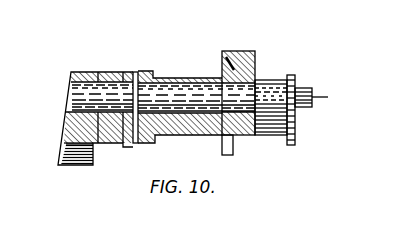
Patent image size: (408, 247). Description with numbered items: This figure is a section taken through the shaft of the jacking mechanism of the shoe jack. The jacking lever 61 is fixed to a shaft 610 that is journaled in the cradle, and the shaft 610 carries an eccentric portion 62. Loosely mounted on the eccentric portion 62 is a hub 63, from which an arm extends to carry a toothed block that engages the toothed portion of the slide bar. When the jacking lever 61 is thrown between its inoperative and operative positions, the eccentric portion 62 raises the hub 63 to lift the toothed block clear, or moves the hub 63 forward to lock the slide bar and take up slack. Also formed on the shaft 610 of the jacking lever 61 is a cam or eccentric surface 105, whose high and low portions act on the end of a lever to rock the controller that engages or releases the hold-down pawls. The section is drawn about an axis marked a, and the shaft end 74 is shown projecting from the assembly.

The jacking lever 61 is at (78, 72).
The eccentric portion 62 is at (222, 64).
The hub 63 is at (256, 52).
The shaft 74 is at (299, 90).
The cam or eccentric surface 105 is at (112, 147).
The shaft 610 is at (150, 143).
The axis point a is at (326, 96).